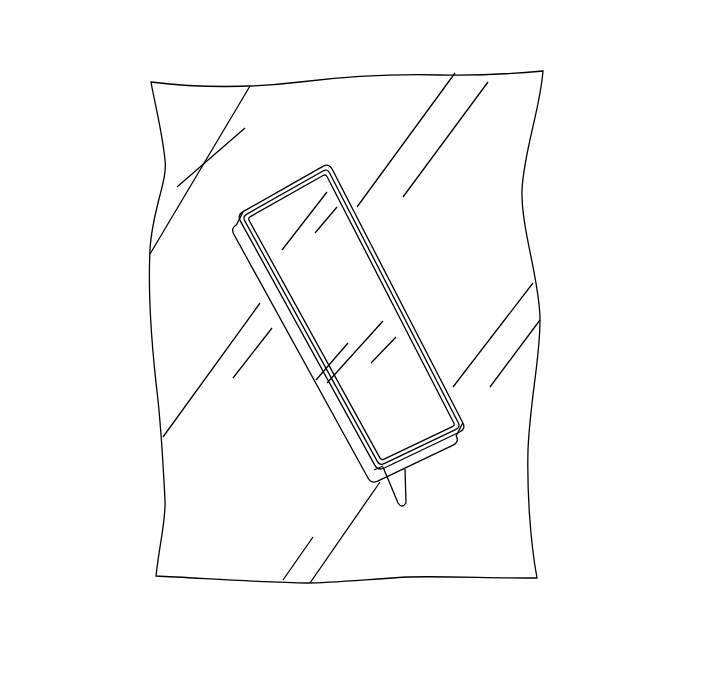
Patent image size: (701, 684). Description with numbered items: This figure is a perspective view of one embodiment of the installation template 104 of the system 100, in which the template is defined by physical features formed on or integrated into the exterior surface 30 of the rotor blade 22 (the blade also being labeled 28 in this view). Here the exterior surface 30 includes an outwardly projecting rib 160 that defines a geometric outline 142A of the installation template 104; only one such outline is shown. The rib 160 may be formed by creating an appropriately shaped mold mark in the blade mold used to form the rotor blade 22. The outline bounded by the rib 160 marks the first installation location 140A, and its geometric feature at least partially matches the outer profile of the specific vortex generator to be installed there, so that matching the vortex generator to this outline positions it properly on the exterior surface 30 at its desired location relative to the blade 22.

The system 100 is at (111, 88).
The rotor blade 22 is at (402, 100).
The outer surface 28 is at (403, 96).
The exterior surface 30 is at (292, 103).
The installation template 104 is at (423, 268).
The first installation location 140A is at (364, 306).
The geometric outline 142A is at (313, 382).
The outwardly projecting rib 160 is at (313, 382).